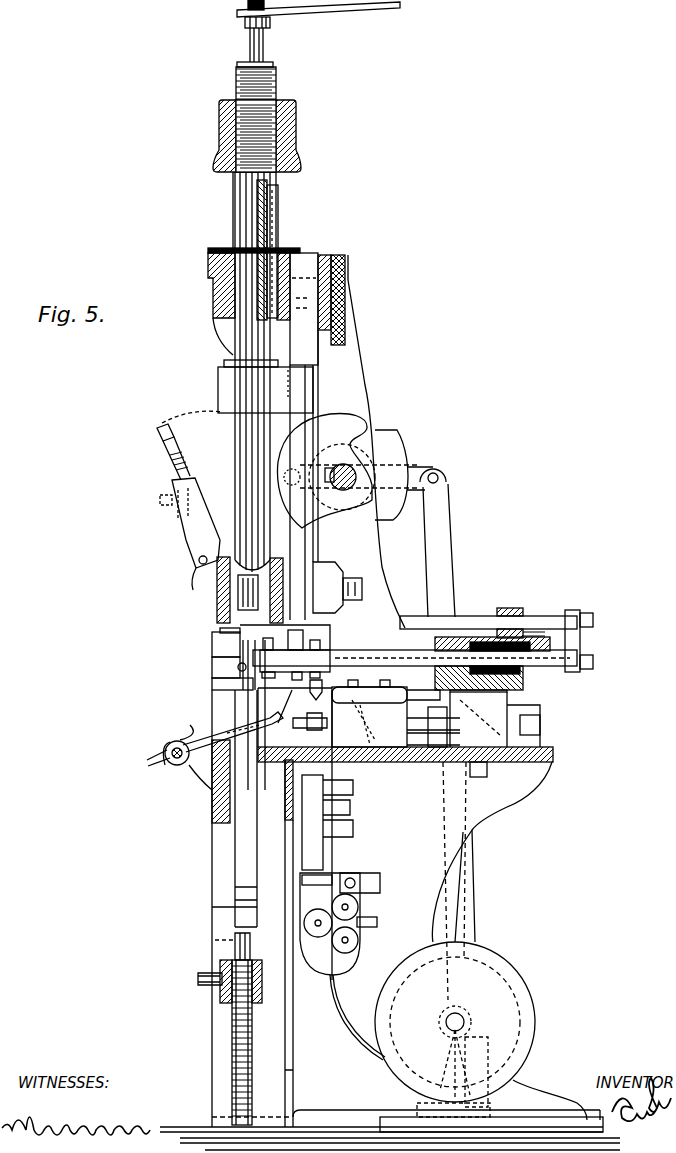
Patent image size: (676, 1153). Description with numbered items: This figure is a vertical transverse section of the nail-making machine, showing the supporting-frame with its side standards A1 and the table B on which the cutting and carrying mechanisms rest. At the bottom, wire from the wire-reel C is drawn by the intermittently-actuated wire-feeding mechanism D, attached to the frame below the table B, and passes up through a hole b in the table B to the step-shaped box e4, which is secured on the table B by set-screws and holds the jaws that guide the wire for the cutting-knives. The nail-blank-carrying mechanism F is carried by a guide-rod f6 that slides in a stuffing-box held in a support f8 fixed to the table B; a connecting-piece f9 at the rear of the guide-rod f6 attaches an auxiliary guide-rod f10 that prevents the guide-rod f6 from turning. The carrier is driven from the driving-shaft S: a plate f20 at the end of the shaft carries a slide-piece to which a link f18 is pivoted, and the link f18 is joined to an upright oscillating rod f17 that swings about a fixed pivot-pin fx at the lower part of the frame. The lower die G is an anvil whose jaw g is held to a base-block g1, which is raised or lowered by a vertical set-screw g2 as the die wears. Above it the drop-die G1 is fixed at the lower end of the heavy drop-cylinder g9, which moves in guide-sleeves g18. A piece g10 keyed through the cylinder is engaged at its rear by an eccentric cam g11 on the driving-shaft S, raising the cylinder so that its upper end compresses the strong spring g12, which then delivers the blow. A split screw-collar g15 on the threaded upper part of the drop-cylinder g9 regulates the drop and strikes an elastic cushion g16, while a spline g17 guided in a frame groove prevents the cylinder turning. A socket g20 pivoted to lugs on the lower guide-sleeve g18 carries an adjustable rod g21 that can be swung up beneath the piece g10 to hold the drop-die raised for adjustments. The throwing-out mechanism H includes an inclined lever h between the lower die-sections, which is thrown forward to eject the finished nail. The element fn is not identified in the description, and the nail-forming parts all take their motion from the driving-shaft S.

The spring g12 is at (318, 13).
The drop-cylinder g9 is at (242, 300).
The split screw-collar g15 is at (242, 119).
The spline g17 is at (290, 251).
The elastic cushion or plate g16 is at (288, 250).
The side standards A1 is at (390, 702).
The keyed piece g10 is at (251, 386).
The adjustable rod g21 is at (166, 452).
The socket g20 is at (189, 534).
The guide-sleeves g18 is at (217, 605).
The eccentric cam g11 is at (326, 471).
The driving-shaft S is at (349, 477).
The plate f20 is at (362, 472).
The link f18 is at (426, 463).
The upright oscillating rod f17 is at (453, 550).
The fixed pivot-pin fx is at (521, 611).
The auxiliary guide-rod f10 is at (488, 613).
The guide-rod f6 is at (433, 664).
The connecting-piece f9 is at (583, 641).
The support f8 is at (495, 717).
The nail-blank-carrying mechanism F is at (295, 652).
The hole b is at (330, 714).
The drop-die G1 is at (249, 602).
The lower die G is at (250, 715).
The throwing-out mechanism H is at (213, 757).
The throwing-out lever h is at (233, 732).
The step-shaped box e4 is at (396, 713).
The table B is at (405, 873).
The jaw g is at (234, 808).
The base-block g1 is at (216, 937).
The vertical set-screw g2 is at (232, 1030).
The wire-feeding mechanism D is at (340, 875).
The belt fn is at (476, 886).
The wire-reel C is at (455, 1029).